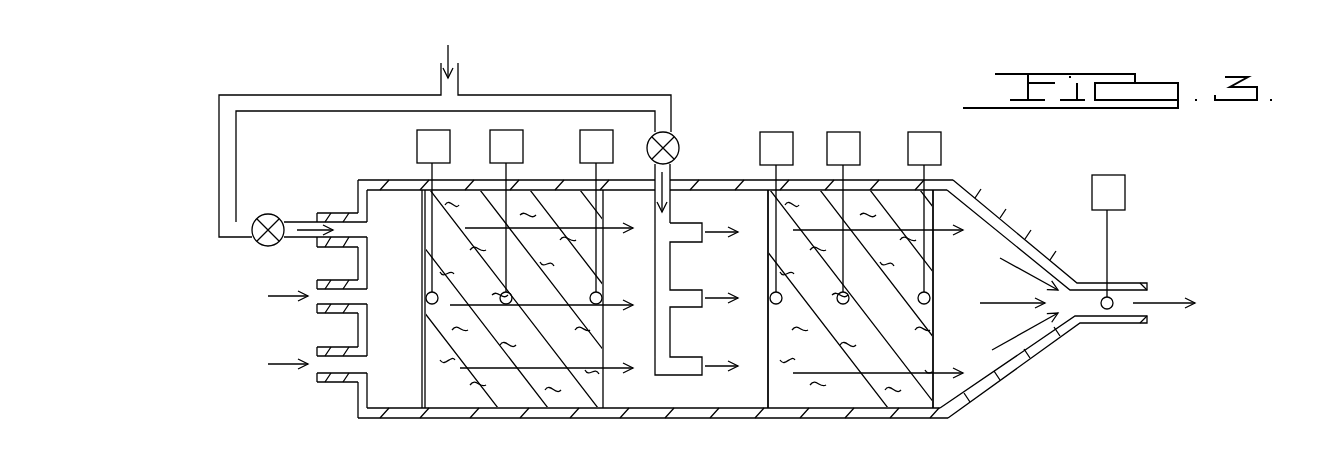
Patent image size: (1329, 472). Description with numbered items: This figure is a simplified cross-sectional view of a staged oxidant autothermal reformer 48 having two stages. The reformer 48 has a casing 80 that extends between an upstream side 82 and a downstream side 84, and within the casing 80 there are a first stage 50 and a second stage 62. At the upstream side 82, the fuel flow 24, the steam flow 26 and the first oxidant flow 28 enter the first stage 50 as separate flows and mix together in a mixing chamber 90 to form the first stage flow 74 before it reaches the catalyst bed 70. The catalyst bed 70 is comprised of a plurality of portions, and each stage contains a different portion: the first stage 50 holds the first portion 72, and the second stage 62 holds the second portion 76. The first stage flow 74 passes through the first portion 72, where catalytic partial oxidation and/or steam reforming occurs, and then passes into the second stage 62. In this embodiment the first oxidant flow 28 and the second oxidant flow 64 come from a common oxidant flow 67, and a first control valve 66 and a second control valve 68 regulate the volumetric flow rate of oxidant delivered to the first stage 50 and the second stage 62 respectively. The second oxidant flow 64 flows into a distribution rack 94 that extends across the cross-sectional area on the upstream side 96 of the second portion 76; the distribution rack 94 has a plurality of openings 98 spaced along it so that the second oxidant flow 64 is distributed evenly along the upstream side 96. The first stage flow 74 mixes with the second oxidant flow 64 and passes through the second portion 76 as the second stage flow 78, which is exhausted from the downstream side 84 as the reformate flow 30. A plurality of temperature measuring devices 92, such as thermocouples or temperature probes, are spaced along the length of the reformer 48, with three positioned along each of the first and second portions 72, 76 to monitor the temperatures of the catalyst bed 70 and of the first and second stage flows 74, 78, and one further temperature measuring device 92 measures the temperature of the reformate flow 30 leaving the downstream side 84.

The fuel flow 24 is at (282, 362).
The water flow 26 is at (282, 294).
The first oxidant flow 28 is at (306, 227).
The reformate flow 30 is at (1160, 300).
The autothermal reformer 48 is at (772, 88).
The first stage 50 is at (442, 426).
The second stage 62 is at (878, 432).
The second oxidant flow 64 is at (672, 182).
The first control valve 66 is at (266, 214).
The common oxidant flow 67 is at (441, 56).
The second control valve 68 is at (679, 132).
The catalyst bed 70 is at (478, 417).
The first portion of the catalyst bed 72 is at (545, 417).
The first stage flow 74 is at (550, 190).
The second portion of the catalyst bed 76 is at (777, 418).
The second stage flow 78 is at (945, 352).
The casing 80 is at (988, 205).
The upstream side 82 is at (387, 167).
The downstream side 84 is at (1051, 215).
The mixing chamber 90 is at (385, 382).
The temperature measuring devices 92 is at (504, 130).
The distribution rack 94 is at (660, 322).
The upstream side of the second portion 96 is at (767, 243).
The openings 98 is at (700, 243).